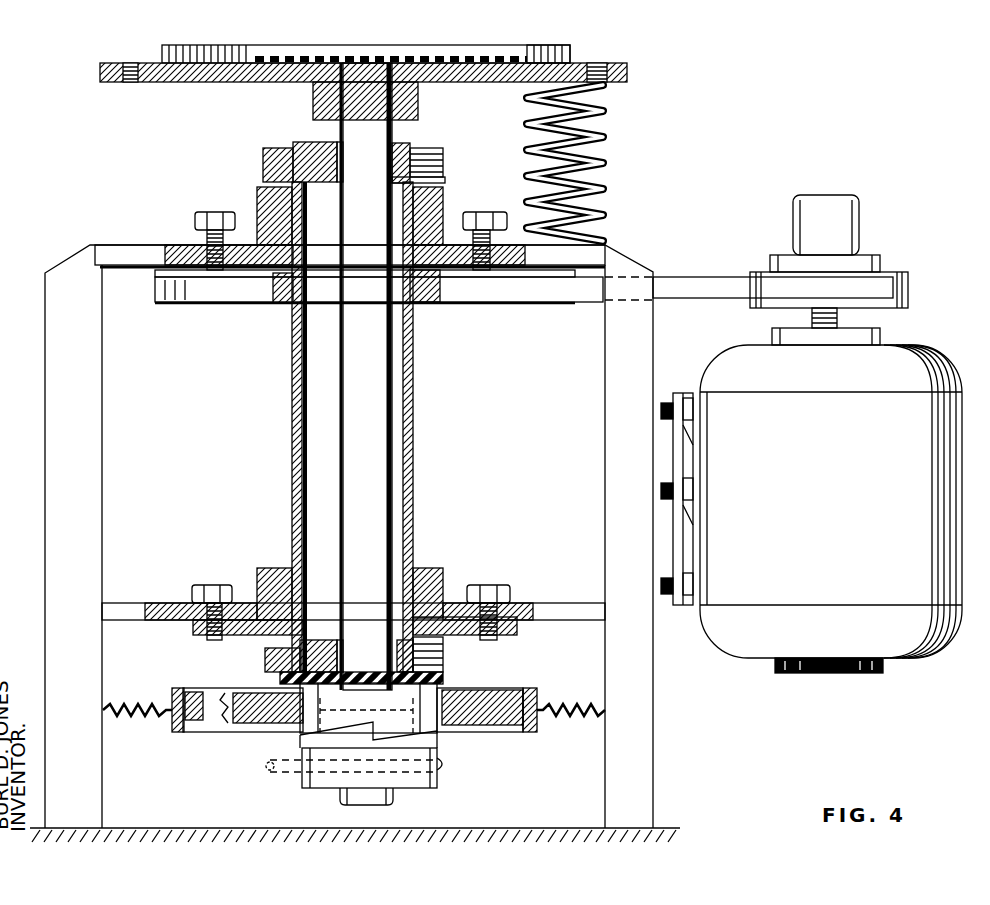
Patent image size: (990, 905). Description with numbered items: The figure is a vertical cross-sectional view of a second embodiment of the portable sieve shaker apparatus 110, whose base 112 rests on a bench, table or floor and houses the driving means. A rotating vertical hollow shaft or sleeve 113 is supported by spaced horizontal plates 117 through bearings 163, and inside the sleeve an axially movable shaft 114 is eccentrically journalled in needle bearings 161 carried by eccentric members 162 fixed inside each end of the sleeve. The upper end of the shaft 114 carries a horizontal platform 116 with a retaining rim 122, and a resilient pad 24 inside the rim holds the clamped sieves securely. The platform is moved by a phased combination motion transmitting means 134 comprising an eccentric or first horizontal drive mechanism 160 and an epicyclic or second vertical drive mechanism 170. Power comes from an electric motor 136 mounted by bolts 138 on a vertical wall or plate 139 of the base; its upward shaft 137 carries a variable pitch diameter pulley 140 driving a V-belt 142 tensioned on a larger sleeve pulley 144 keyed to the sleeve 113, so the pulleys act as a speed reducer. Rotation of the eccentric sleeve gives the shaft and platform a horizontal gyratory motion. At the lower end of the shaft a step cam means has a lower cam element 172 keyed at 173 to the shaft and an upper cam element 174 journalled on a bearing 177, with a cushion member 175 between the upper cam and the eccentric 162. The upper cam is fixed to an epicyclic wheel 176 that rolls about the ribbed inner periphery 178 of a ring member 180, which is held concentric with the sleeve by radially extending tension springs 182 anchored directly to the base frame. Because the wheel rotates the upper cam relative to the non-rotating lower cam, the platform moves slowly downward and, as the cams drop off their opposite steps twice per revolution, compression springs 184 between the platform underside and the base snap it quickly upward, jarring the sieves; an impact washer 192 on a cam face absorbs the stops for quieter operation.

The portable sieve shaker apparatus 110 is at (496, 436).
The base 112 is at (389, 514).
The hollow shaft or sleeve 113 is at (292, 383).
The axially movable shaft 114 is at (376, 430).
The platform 116 is at (628, 72).
The horizontal plates 117 is at (135, 250).
The retaining rim 122 is at (455, 62).
The resilient pad 24 is at (535, 50).
The phased combination motion transmitting means 134 is at (348, 376).
The electric motor 136 is at (838, 473).
The motor shaft 137 is at (840, 316).
The bolts 138 is at (688, 393).
The vertical wall or plate 139 is at (662, 600).
The variable pitch diameter pulley 140 is at (890, 270).
The V-belt 142 is at (700, 285).
The sleeve pulley 144 is at (527, 302).
The eccentric or first horizontal drive mechanism 160 is at (379, 321).
The needle bearings 161 is at (338, 163).
The eccentric members 162 is at (302, 145).
The bearings 163 is at (300, 217).
The epicyclic or second vertical drive mechanism 170 is at (354, 730).
The lower cam element 172 is at (323, 783).
The key 173 is at (440, 765).
The upper cam element 174 is at (423, 733).
The cushion member 175 is at (440, 680).
The epicyclic or planetary wheel 176 is at (247, 733).
The bearing 177 is at (340, 697).
The inner periphery 178 is at (195, 688).
The ring member 180 is at (168, 692).
The tension springs 182 is at (140, 716).
The compression springs 184 is at (605, 158).
The impact washer 192 is at (330, 735).